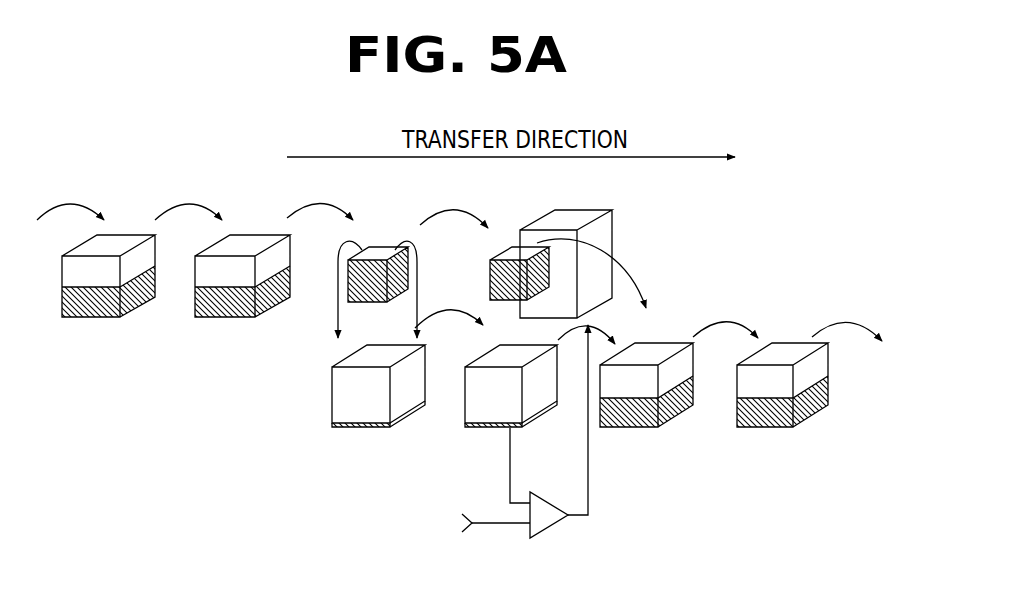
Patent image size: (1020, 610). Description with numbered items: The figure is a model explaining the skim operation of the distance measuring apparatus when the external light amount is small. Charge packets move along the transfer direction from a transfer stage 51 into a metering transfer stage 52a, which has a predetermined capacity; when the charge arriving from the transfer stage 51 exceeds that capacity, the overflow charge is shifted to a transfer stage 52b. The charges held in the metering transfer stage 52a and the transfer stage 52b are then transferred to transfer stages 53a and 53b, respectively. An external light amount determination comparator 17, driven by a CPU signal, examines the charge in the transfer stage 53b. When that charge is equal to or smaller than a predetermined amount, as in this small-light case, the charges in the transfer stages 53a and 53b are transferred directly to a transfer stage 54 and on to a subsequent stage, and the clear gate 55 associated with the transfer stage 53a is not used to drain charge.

The transfer stage 51 is at (215, 318).
The metering transfer stage 52a is at (347, 283).
The transfer stage 52b is at (360, 428).
The transfer stage 53a is at (490, 270).
The transfer stage 53b is at (473, 428).
The transfer stage 54 is at (652, 427).
The clear gate 55 is at (612, 228).
The external light amount determination comparator 17 is at (553, 526).